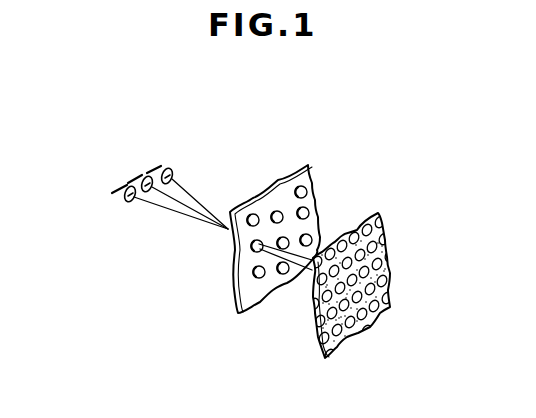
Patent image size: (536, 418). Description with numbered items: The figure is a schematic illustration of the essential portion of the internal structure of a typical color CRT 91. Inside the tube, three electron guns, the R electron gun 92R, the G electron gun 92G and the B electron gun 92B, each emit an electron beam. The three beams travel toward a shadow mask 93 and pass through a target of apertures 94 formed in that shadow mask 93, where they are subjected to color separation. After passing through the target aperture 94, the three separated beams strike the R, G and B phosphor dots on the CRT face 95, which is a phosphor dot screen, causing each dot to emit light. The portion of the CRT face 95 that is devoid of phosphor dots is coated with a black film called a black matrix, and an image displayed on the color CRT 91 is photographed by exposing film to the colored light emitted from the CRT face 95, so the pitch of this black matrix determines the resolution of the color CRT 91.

The color CRT 91 is at (185, 292).
The B electron gun 92B is at (118, 181).
The G electron gun 92G is at (147, 170).
The R electron gun 92R is at (170, 170).
The shadow mask 93 is at (311, 164).
The apertures 94 is at (309, 218).
The CRT face 95 is at (382, 217).